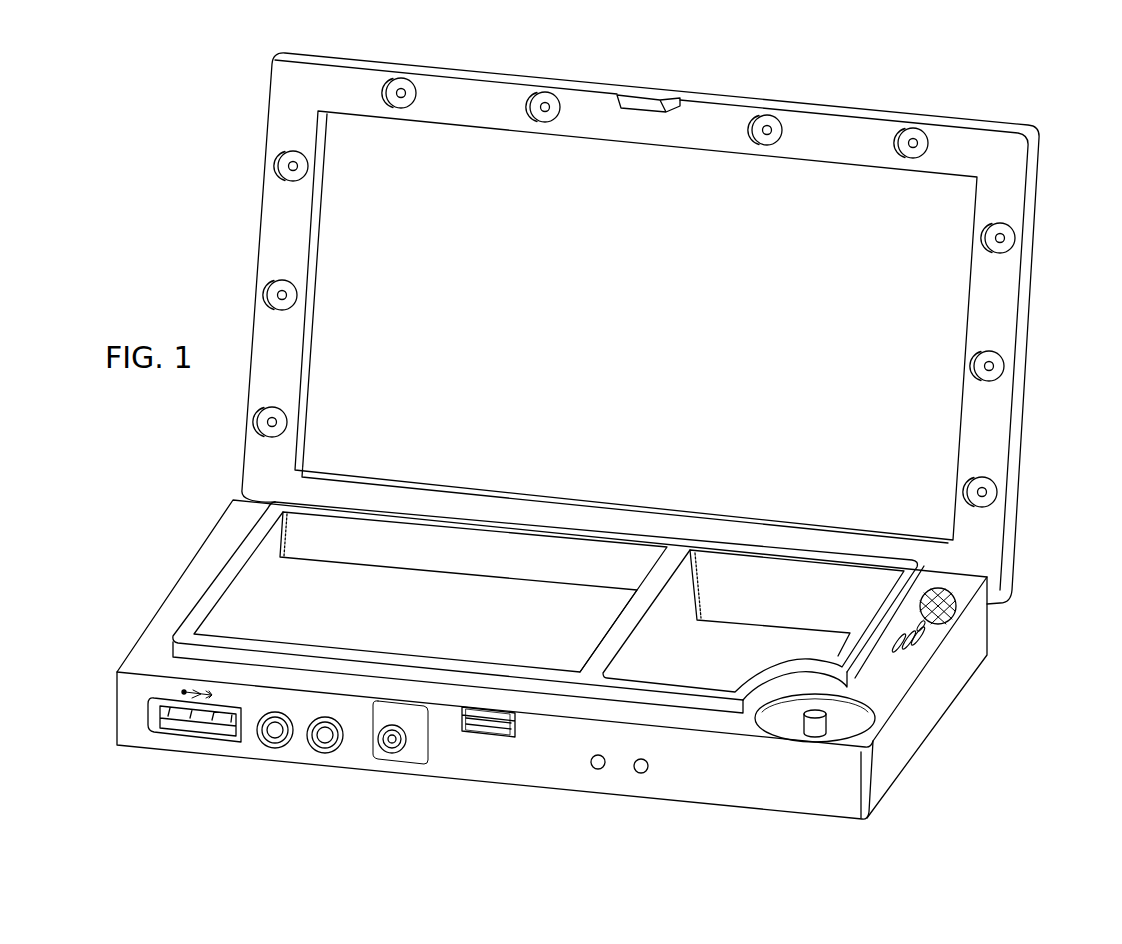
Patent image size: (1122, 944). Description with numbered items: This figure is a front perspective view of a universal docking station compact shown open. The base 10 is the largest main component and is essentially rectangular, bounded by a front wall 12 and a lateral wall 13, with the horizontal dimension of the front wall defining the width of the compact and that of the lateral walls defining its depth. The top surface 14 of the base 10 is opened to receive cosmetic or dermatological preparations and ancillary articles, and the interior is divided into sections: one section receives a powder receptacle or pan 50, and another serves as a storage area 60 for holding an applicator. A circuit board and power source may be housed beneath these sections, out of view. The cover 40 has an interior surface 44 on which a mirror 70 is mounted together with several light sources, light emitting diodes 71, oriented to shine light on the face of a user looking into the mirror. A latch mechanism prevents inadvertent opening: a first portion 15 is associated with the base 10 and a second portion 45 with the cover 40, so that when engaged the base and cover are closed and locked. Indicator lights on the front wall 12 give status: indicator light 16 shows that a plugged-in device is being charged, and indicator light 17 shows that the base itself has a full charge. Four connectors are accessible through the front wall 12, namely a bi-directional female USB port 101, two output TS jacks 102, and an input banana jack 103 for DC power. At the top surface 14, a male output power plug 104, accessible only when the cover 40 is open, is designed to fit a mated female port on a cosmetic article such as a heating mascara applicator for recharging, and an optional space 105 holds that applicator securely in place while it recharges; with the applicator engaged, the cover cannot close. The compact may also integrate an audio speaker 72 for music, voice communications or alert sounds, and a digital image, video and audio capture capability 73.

The base 10 is at (160, 603).
The front wall 12 is at (828, 798).
The lateral wall 13 is at (970, 651).
The top surface 14 is at (897, 677).
The first portion of the latch mechanism 15 is at (470, 728).
The indicator light 16 is at (590, 761).
The indicator light 17 is at (648, 766).
The cover 40 is at (1035, 300).
The interior surface 44 is at (1002, 399).
The second portion of the latch mechanism 45 is at (650, 93).
The powder receptacle or pan 50 is at (297, 577).
The storage area 60 is at (827, 648).
The mirror 70 is at (335, 232).
The light emitting diodes 71 is at (543, 100).
The audio speaker 72 is at (957, 607).
The digital image capture capability 73 is at (936, 650).
The bi-directional female USB port 101 is at (182, 728).
The output TS jacks 102 is at (268, 748).
The input banana jack 103 is at (388, 753).
The male output power plug 104 is at (825, 720).
The space 105 is at (783, 724).